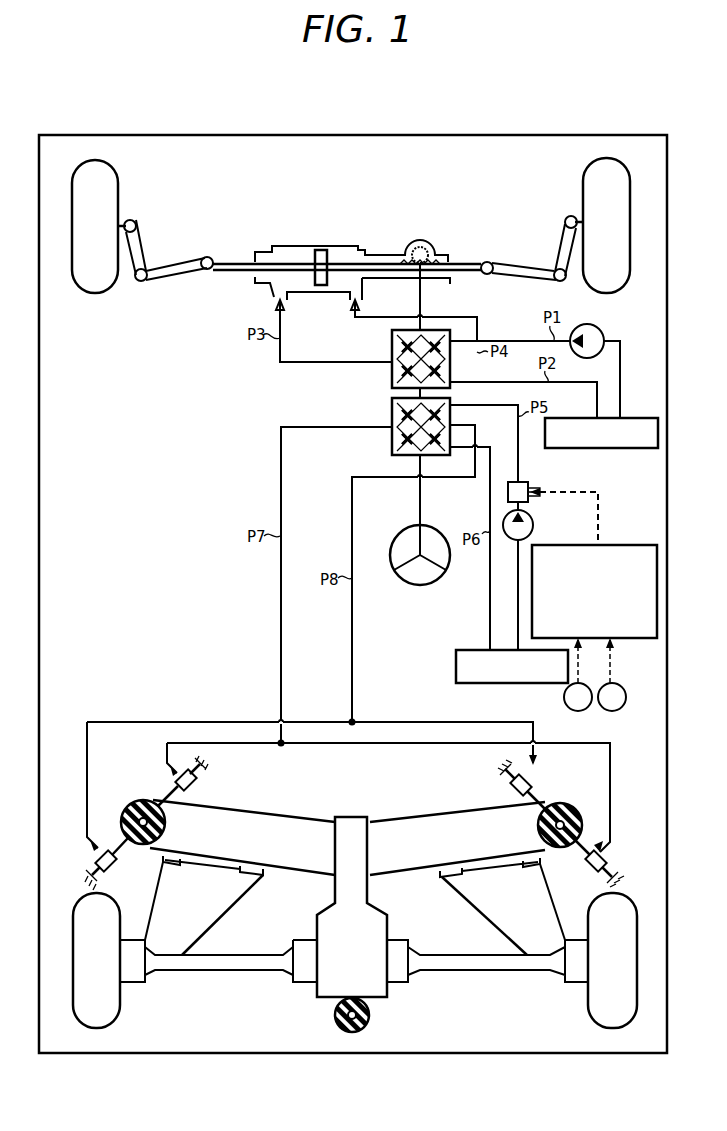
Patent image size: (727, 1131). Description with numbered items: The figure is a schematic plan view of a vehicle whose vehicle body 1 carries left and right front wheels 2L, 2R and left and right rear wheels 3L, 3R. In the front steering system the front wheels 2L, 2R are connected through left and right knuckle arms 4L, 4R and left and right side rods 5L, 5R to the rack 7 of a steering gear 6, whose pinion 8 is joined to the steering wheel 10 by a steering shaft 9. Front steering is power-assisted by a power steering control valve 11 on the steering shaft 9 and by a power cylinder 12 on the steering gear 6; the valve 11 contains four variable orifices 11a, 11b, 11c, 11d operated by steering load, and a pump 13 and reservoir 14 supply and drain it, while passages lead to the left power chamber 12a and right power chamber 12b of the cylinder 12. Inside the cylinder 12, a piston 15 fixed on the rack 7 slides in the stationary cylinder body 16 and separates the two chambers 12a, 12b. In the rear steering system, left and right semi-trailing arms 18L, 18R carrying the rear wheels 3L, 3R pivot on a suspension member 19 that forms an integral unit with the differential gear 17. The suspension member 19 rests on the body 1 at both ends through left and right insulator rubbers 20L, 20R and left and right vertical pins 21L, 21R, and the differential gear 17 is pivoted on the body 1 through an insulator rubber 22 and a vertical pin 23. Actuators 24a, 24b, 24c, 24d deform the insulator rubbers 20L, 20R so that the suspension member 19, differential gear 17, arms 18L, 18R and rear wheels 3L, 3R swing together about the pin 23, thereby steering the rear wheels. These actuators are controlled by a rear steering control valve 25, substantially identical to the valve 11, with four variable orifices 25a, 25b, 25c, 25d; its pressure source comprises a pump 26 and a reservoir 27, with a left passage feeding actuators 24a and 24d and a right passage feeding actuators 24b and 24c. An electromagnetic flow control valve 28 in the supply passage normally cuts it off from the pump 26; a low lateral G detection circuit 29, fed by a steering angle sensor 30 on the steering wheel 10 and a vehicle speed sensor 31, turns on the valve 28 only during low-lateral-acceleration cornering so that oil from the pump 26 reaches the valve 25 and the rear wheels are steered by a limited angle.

The vehicle body 1 is at (523, 133).
The left front wheel 2L is at (94, 294).
The right front wheel 2R is at (628, 182).
The left rear wheel 3L is at (120, 1010).
The right rear wheel 3R is at (588, 1006).
The left knuckle arm 4L is at (140, 232).
The right knuckle arm 4R is at (565, 230).
The left side rod 5L is at (162, 283).
The right side rod 5R is at (516, 268).
The steering gear 6 is at (436, 232).
The rack 7 is at (212, 258).
The pinion 8 is at (420, 245).
The steering shaft 9 is at (424, 291).
The steering wheel 10 is at (402, 580).
The power steering control valve 11 is at (316, 377).
The variable orifice 11a is at (395, 347).
The variable orifice 11b is at (450, 374).
The variable orifice 11c is at (453, 345).
The variable orifice 11d is at (395, 375).
The power cylinder 12 is at (333, 214).
The left power chamber 12a is at (285, 250).
The right power chamber 12b is at (428, 252).
The pump 13 is at (604, 334).
The reservoir 14 is at (637, 418).
The piston 15 is at (320, 250).
The cylinder body 16 is at (346, 250).
The differential gear 17 is at (364, 966).
The left semi-trailing arm 18L is at (230, 920).
The right semi-trailing arm 18R is at (490, 920).
The suspension member 19 is at (368, 818).
The left insulator rubber 20L is at (125, 806).
The right insulator rubber 20R is at (585, 812).
The left vertical pin 21L is at (145, 800).
The right vertical pin 21R is at (556, 803).
The insulator rubber 22 is at (335, 1022).
The vertical pin 23 is at (368, 1017).
The actuator 24a is at (197, 788).
The actuator 24b is at (98, 856).
The actuator 24c is at (508, 790).
The actuator 24d is at (608, 858).
The rear steering control valve 25 is at (356, 432).
The variable orifice 25a is at (395, 410).
The variable orifice 25b is at (435, 458).
The variable orifice 25c is at (450, 413).
The variable orifice 25d is at (395, 444).
The pump 26 is at (535, 524).
The reservoir 27 is at (456, 666).
The flow control valve 28 is at (524, 482).
The low lateral G detection circuit 29 is at (625, 545).
The steering angle sensor 30 is at (564, 697).
The vehicle speed sensor 31 is at (624, 686).